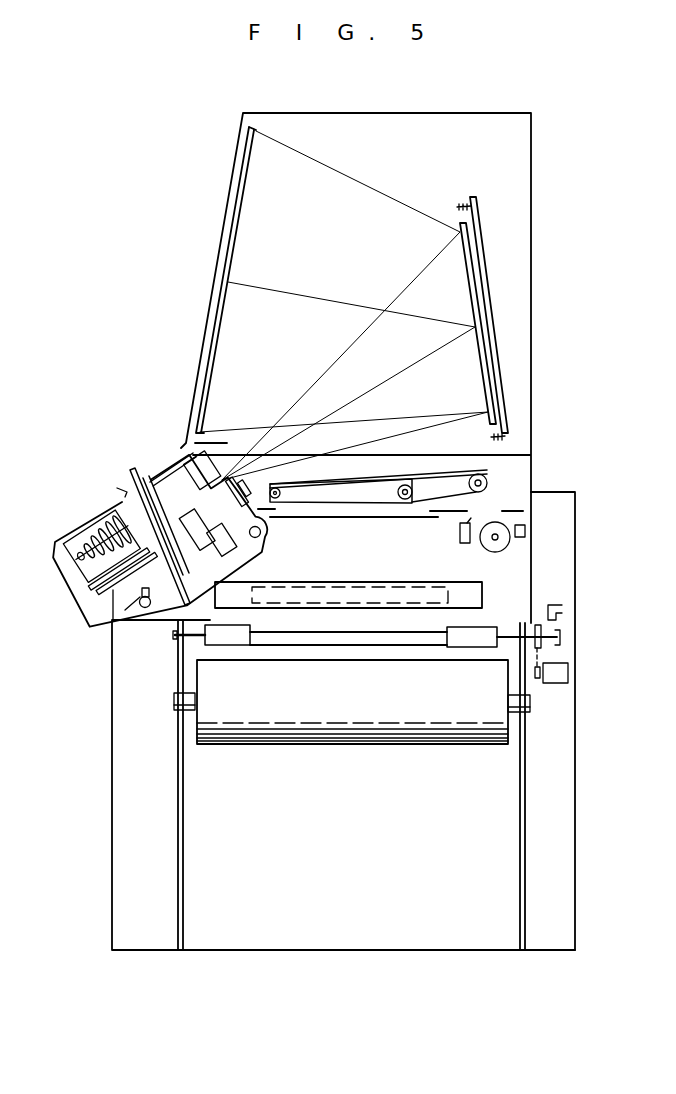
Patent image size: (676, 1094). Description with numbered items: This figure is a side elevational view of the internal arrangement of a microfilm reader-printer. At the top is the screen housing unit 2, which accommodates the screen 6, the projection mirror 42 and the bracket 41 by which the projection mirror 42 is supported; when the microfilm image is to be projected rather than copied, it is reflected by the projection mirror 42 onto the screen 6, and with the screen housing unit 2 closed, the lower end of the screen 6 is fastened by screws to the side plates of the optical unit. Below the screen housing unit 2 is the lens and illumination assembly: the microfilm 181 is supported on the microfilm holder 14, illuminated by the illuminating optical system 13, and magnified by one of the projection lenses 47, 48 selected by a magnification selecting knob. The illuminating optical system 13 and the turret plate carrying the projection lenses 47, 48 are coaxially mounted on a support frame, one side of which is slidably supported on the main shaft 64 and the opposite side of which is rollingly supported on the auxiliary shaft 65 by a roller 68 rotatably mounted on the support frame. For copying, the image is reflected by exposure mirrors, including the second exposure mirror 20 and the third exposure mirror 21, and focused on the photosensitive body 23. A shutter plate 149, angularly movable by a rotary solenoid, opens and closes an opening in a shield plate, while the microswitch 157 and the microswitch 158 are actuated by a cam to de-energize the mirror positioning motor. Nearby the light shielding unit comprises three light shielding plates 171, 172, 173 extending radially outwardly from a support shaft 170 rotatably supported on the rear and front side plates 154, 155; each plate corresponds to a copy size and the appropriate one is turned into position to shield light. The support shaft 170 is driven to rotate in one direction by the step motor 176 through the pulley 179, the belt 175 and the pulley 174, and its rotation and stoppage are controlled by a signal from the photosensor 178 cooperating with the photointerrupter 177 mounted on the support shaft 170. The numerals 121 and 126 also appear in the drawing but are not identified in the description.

The screen housing unit 2 is at (512, 100).
The screen 6 is at (237, 218).
The bracket 41 is at (478, 228).
The projection mirror 42 is at (468, 286).
The drive belt 121 is at (452, 470).
The belt pulley 126 is at (358, 507).
The shutter plate 149 is at (352, 518).
The microswitch 157 is at (460, 536).
The microswitch 158 is at (527, 531).
The illuminating optical system 13 is at (84, 525).
The microfilm holder 14 is at (120, 484).
The microfilm 181 is at (124, 485).
The projection lens 47 is at (187, 448).
The main shaft 64 is at (262, 533).
The projection lens 48 is at (235, 562).
The auxiliary shaft 65 is at (145, 608).
The roller 68 is at (125, 610).
The third exposure mirror 21 is at (463, 583).
The second exposure mirror 20 is at (367, 595).
The light shielding plate 171 is at (351, 657).
The light shielding plate 172 is at (211, 635).
The light shielding plate 173 is at (470, 644).
The support shaft 170 is at (508, 632).
The pulley 179 is at (538, 624).
The photosensor 178 is at (563, 610).
The photointerrupter 177 is at (555, 655).
The step motor 176 is at (568, 672).
The belt 175 is at (535, 662).
The pulley 174 is at (538, 683).
The photosensitive body 23 is at (268, 744).
The front side plate 155 is at (177, 831).
The rear side plate 154 is at (520, 840).